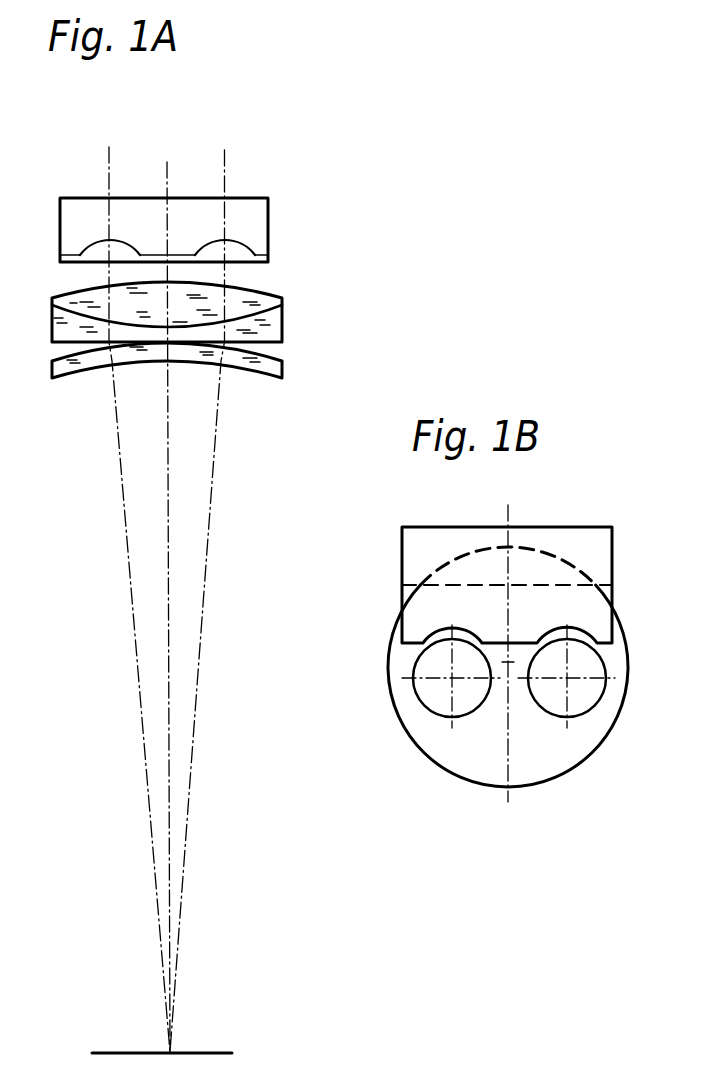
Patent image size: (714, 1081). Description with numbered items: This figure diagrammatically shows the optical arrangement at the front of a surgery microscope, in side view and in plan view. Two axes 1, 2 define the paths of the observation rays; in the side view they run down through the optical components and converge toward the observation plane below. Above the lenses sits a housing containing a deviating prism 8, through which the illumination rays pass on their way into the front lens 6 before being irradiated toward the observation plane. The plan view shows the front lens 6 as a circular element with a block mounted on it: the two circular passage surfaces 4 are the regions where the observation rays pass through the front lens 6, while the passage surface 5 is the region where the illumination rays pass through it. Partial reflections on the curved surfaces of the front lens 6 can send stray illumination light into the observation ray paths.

In FIG. 1A, the axis for the path of the observation rays 1 is at (108, 163).
In FIG. 1A, the axis for the path of the observation rays 2 is at (227, 163).
In FIG. 1A, the deviating prism 8 is at (268, 232).
In FIG. 1B, the passage surface of the observation rays 4 is at (430, 692).
In FIG. 1B, the passage surface of the illumination rays 5 is at (578, 608).
In FIG. 1B, the front lens 6 is at (568, 770).